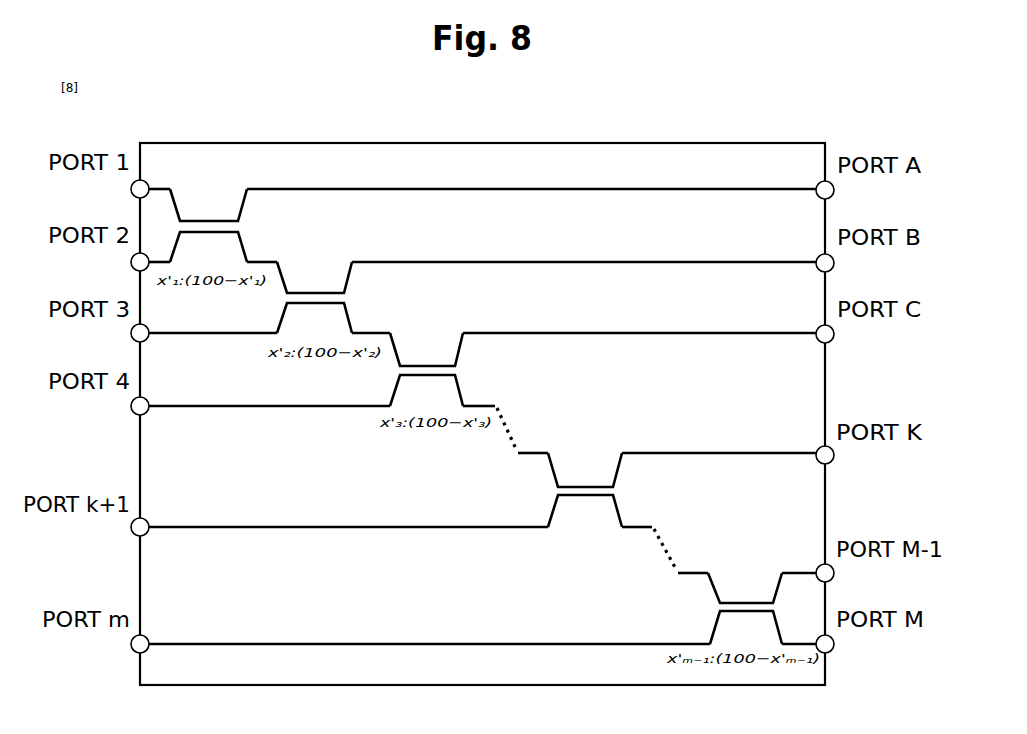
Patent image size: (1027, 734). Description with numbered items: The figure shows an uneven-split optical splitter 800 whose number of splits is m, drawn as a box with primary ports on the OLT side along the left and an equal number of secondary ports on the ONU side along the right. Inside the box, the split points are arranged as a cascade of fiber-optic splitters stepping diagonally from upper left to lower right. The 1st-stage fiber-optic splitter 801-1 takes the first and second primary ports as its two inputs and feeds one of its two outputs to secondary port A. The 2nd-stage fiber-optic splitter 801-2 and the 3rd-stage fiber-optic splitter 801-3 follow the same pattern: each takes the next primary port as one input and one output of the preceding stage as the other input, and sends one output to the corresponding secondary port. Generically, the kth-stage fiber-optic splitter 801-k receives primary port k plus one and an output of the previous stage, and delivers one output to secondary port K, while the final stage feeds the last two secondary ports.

The uneven-split optical splitter 800 is at (400, 143).
The 1st-stage fiber-optic splitter 801-1 is at (197, 216).
The 2nd-stage fiber-optic splitter 801-2 is at (317, 288).
The 3rd-stage fiber-optic splitter 801-3 is at (420, 362).
The kth-stage fiber-optic splitter 801-k is at (583, 483).